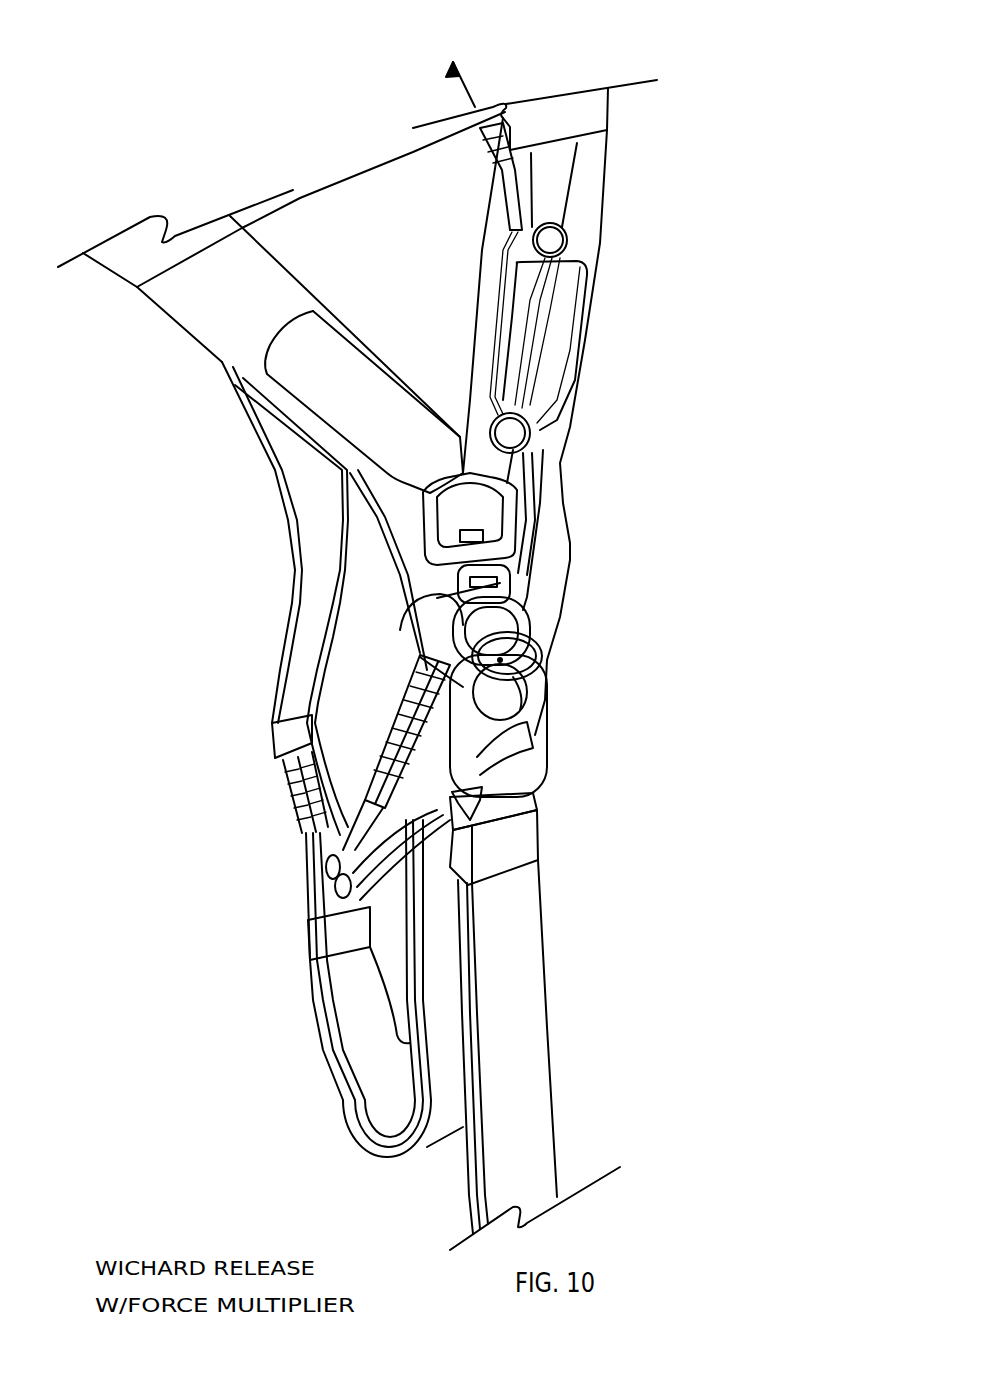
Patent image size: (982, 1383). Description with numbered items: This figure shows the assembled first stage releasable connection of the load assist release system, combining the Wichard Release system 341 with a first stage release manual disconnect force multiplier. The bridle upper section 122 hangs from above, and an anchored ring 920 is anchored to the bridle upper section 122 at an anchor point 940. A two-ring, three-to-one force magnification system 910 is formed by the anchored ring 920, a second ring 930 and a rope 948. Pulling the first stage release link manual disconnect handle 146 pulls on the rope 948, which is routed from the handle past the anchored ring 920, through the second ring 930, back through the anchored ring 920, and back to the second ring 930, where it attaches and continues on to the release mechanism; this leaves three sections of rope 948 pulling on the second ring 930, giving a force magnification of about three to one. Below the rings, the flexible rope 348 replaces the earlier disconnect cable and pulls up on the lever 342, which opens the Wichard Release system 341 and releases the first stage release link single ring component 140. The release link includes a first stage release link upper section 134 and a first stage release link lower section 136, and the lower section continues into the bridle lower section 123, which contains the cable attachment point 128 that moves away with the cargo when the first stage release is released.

The first stage release link manual disconnect handle 146 is at (582, 53).
The first stage release link upper section 134 is at (183, 313).
The bridle upper section 122 is at (593, 160).
The anchor point 940 is at (517, 158).
The anchored ring 920 is at (569, 236).
The rope 948 is at (507, 247).
The second ring 930 is at (537, 437).
The two-ring, three-to-one force magnification system 910 is at (680, 420).
The rope 348 is at (533, 540).
The Wichard Release #2776 system 341 is at (423, 593).
The lever 342 is at (423, 627).
The first stage release link single ring component 140 is at (540, 680).
The first stage release link lower section 136 is at (547, 790).
The cable attachment point 128 is at (523, 850).
The bridle lower section 123 is at (528, 1037).